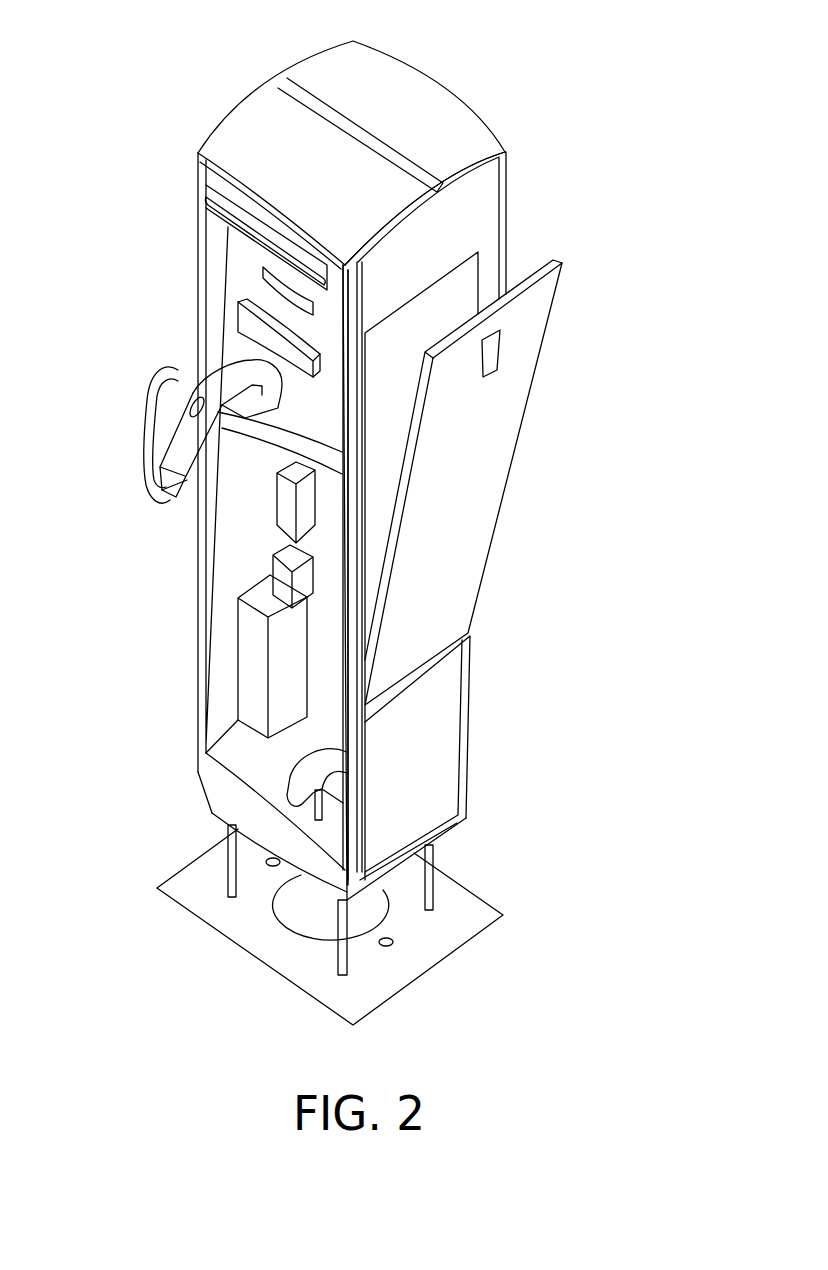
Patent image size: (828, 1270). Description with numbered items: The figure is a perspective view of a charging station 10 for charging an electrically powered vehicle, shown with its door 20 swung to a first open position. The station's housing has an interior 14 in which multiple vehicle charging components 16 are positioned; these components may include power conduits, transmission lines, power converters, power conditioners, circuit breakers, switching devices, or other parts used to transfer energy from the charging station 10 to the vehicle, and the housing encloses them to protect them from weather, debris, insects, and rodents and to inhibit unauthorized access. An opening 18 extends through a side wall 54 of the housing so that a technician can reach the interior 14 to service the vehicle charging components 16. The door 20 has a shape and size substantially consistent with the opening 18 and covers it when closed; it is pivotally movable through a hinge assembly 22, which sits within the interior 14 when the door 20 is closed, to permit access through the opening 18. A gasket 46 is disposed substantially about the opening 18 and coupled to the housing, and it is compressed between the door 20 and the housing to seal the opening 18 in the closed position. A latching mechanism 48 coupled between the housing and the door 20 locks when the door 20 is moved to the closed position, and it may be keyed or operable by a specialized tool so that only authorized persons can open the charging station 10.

The charging station 10 is at (507, 67).
The interior 14 is at (463, 289).
The vehicle charging components 16 is at (290, 510).
The opening 18 is at (277, 550).
The door 20 is at (470, 548).
The hinge assembly 22 is at (440, 652).
The gasket 46 is at (482, 285).
The latching mechanism 48 is at (493, 355).
The side wall 54 is at (397, 258).